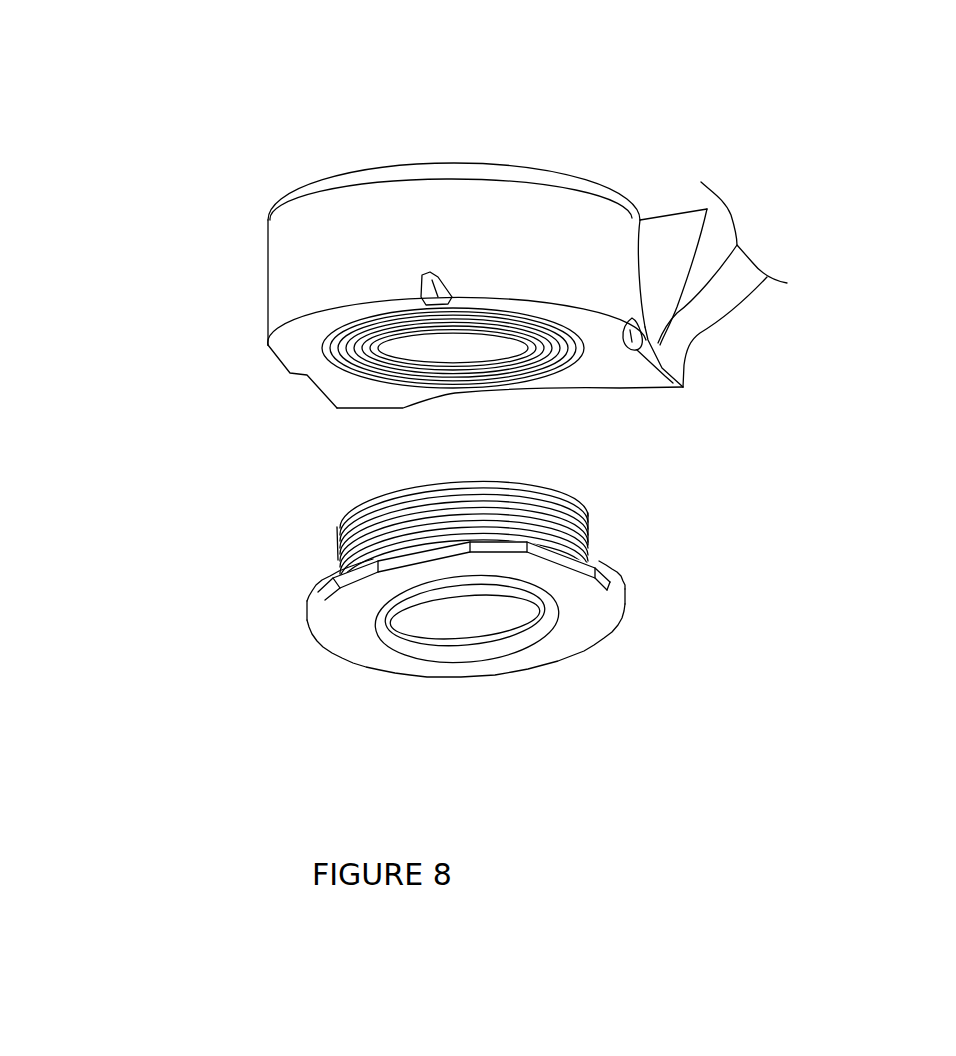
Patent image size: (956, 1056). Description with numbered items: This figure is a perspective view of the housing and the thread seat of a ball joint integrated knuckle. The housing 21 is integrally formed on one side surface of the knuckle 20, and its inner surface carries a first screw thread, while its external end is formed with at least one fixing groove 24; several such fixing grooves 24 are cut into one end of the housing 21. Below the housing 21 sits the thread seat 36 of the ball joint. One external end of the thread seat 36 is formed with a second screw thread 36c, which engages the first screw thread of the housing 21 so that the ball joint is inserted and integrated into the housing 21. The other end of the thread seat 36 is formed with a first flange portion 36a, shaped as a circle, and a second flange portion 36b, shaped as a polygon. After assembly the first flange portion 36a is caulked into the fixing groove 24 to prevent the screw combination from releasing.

The knuckle 20 is at (735, 323).
The housing 21 is at (420, 156).
The fixing groove 24 is at (422, 283).
The thread seat 36 is at (473, 579).
The first flange portion 36a is at (320, 576).
The second flange portion 36b is at (313, 608).
The second screw thread 36c is at (593, 530).